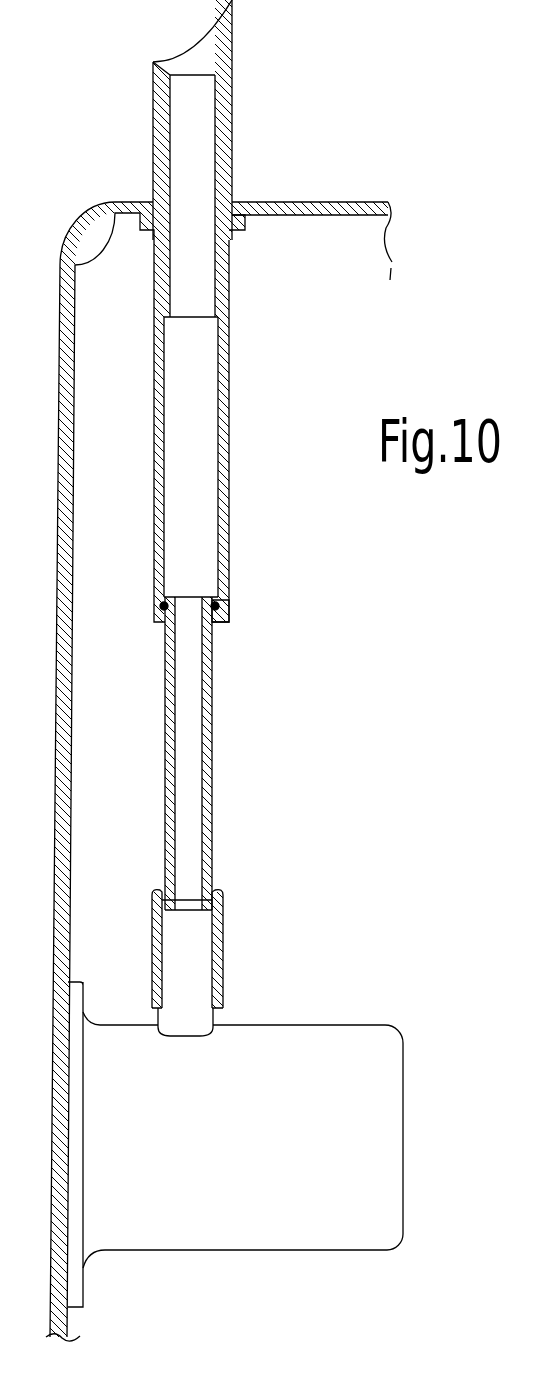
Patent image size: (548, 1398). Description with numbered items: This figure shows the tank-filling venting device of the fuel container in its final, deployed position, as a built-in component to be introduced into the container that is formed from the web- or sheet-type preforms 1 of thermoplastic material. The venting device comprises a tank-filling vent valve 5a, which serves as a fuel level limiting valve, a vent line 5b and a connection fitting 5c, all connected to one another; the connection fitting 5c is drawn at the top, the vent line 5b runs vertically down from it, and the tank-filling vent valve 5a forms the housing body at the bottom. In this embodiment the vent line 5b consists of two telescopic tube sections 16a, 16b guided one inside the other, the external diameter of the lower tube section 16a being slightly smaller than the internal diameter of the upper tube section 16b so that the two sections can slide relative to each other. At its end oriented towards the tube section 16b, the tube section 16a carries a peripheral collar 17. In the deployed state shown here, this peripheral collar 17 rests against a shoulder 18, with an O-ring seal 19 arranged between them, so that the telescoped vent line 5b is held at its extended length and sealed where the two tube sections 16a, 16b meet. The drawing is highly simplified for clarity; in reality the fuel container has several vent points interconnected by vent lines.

The preform 1 is at (313, 180).
The tank-filling vent valve 5a is at (372, 1060).
The vent line 5b is at (237, 363).
The connection fitting 5c is at (232, 78).
The tube section 16a is at (212, 762).
The tube section 16b is at (229, 474).
The peripheral collar 17 is at (207, 602).
The shoulder 18 is at (226, 612).
The O-ring seal 19 is at (160, 606).